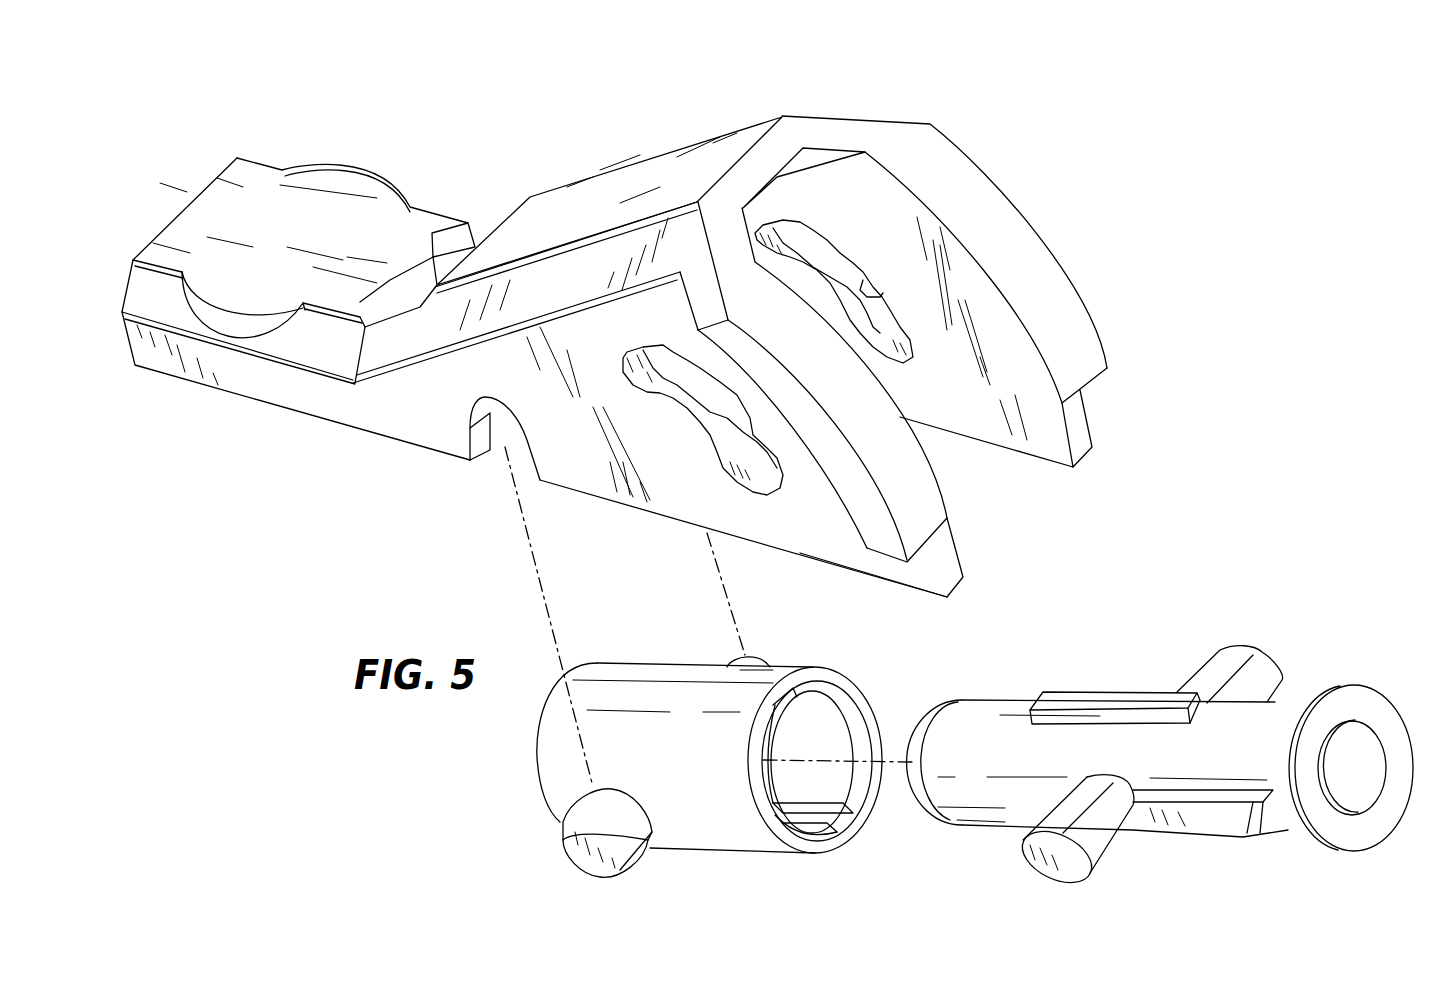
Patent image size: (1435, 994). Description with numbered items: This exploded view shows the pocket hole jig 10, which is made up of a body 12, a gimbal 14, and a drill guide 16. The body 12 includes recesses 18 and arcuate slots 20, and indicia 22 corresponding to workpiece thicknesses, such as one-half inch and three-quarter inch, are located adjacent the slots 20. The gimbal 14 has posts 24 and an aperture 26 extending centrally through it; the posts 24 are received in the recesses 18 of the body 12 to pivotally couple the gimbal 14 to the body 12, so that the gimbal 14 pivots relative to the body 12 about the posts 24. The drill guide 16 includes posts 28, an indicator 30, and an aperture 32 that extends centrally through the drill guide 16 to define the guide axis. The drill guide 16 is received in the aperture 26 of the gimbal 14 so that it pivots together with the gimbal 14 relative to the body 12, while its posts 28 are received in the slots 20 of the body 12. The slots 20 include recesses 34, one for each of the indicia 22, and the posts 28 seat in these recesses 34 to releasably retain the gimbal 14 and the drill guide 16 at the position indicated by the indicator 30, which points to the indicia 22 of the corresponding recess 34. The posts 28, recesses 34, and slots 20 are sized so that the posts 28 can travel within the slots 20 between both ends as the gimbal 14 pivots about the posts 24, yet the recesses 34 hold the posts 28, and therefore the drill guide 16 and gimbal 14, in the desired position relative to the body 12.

The pocket hole jig 10 is at (503, 98).
The body 12 is at (650, 173).
The gimbal 14 is at (652, 693).
The drill guide 16 is at (1120, 743).
The recesses 18 is at (477, 408).
The arcuate slots 20 is at (800, 253).
The indicia 22 is at (803, 320).
The posts 24 is at (577, 847).
The aperture 26 is at (810, 713).
The posts 28 is at (1233, 653).
The indicators 30 is at (1273, 823).
The aperture 32 is at (1340, 753).
The recesses 34 is at (863, 277).